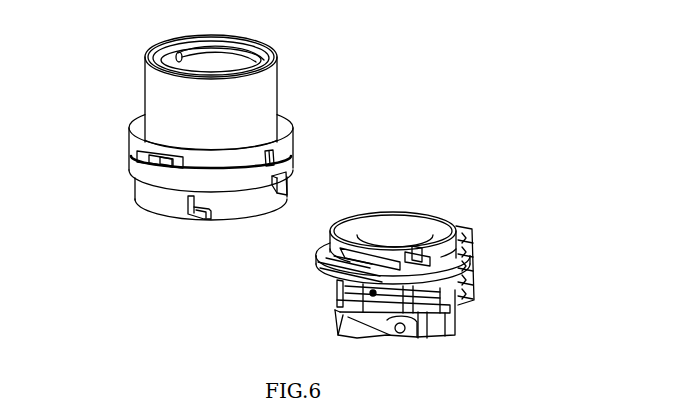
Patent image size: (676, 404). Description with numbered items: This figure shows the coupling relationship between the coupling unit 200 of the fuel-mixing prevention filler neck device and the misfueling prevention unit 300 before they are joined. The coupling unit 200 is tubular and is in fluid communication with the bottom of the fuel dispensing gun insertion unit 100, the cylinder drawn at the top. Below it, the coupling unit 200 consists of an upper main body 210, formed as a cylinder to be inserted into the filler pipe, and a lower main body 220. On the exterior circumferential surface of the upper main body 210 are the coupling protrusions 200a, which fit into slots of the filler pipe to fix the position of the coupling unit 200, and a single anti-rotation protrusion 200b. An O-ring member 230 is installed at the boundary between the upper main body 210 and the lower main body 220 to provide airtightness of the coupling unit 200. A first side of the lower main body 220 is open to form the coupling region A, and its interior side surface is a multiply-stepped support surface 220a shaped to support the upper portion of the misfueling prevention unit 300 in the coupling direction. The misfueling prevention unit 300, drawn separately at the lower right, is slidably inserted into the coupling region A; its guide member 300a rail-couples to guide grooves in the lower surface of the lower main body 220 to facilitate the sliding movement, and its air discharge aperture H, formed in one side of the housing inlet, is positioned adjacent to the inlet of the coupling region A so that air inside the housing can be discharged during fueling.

The fuel dispensing gun insertion unit 100 is at (273, 73).
The coupling unit 200 is at (226, 155).
The upper main body 210 is at (206, 178).
The lower main body 220 is at (247, 215).
The O-ring member 230 is at (146, 182).
The coupling protrusions 200a is at (150, 170).
The anti-rotation protrusion 200b is at (272, 186).
The multiply-stepped support surface 220a is at (207, 219).
The coupling region A is at (224, 203).
The misfueling prevention unit 300 is at (391, 255).
The guide member 300a is at (316, 265).
The air discharge aperture H is at (468, 292).